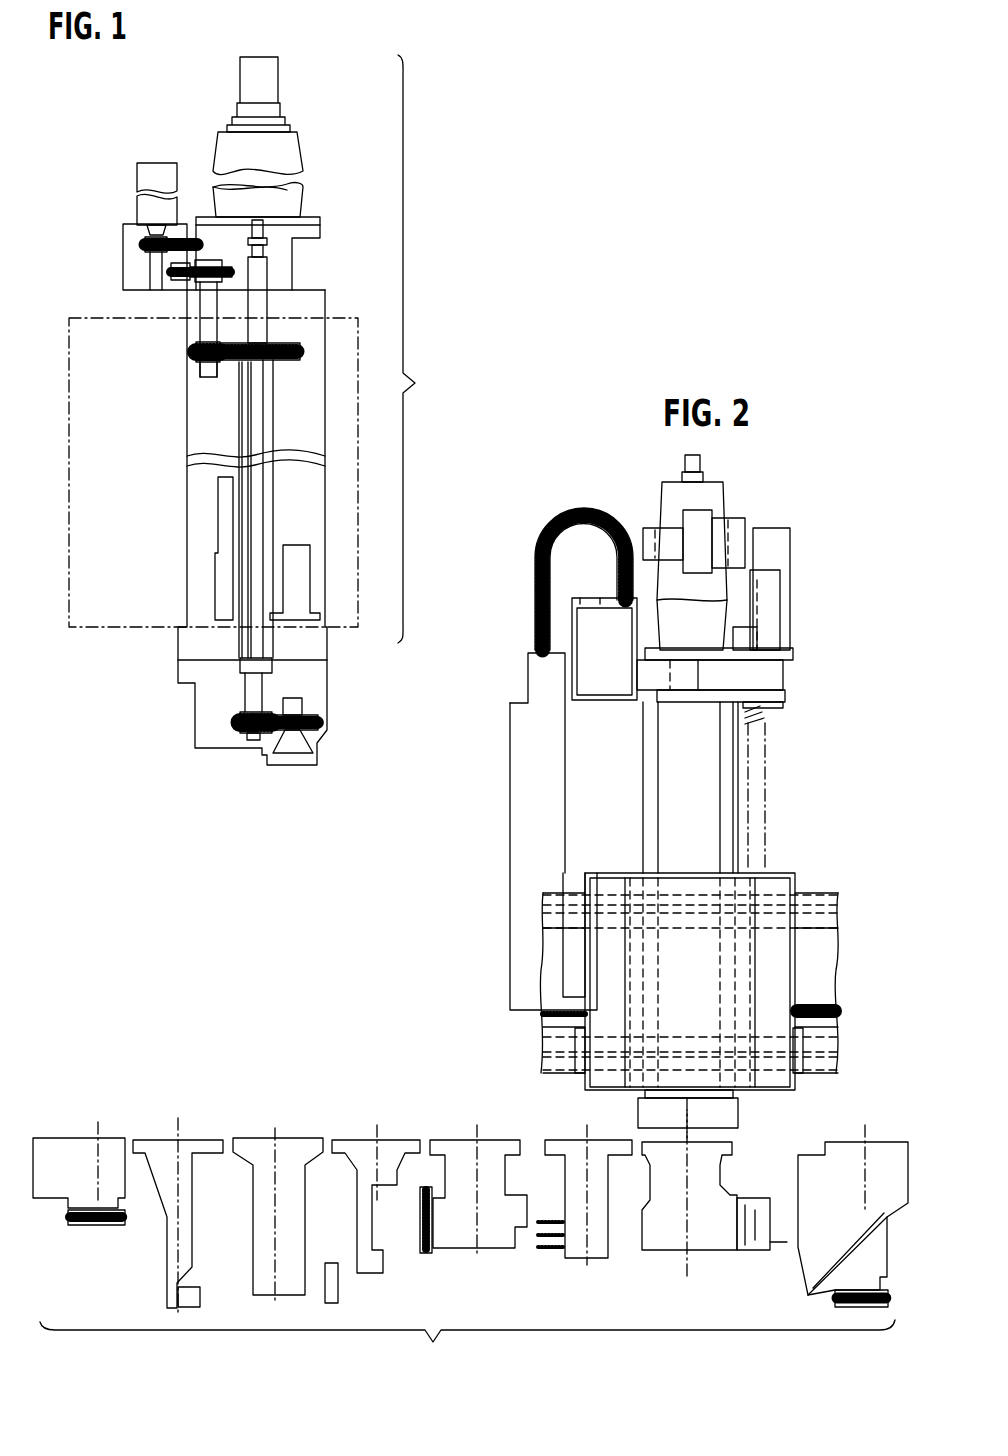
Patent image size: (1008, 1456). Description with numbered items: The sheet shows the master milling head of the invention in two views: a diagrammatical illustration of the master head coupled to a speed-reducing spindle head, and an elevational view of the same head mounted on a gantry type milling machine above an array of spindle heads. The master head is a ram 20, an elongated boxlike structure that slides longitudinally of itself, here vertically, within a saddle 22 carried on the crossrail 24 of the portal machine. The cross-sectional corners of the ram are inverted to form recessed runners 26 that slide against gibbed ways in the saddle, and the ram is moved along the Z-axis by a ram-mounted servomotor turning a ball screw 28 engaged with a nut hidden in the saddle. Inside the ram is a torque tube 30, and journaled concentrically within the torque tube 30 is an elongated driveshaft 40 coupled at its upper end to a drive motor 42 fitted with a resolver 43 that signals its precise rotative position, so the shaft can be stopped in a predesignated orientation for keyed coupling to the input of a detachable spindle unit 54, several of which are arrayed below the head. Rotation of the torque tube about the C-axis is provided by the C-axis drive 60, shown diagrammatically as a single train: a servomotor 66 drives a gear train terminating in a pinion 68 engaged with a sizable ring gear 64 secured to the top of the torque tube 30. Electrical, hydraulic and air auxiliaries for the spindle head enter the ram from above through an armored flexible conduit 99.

In FIG. 1, the ram 20 is at (257, 410).
In FIG. 2, the ram 20 is at (630, 755).
In FIG. 2, the saddle 22 is at (612, 880).
In FIG. 2, the crossrail 24 is at (828, 948).
In FIG. 2, the recessed runners 26 is at (728, 782).
In FIG. 2, the ball screw 28 is at (756, 731).
In FIG. 1, the torque tube 30 is at (272, 425).
In FIG. 1, the driveshaft 40 is at (262, 272).
In FIG. 1, the drive motor 42 is at (295, 204).
In FIG. 2, the drive motor 42 is at (711, 498).
In FIG. 1, the resolver 43 is at (272, 90).
In FIG. 2, the resolver 43 is at (694, 463).
In FIG. 2, the detachable spindle unit 54 is at (836, 1201).
In FIG. 1, the C-axis drive 60 is at (130, 272).
In FIG. 1, the ring gear 64 is at (290, 362).
In FIG. 1, the servomotor 66 is at (151, 170).
In FIG. 2, the servomotor 66 is at (770, 606).
In FIG. 1, the pinion 68 is at (197, 352).
In FIG. 2, the armored flexible conduit 99 is at (585, 508).